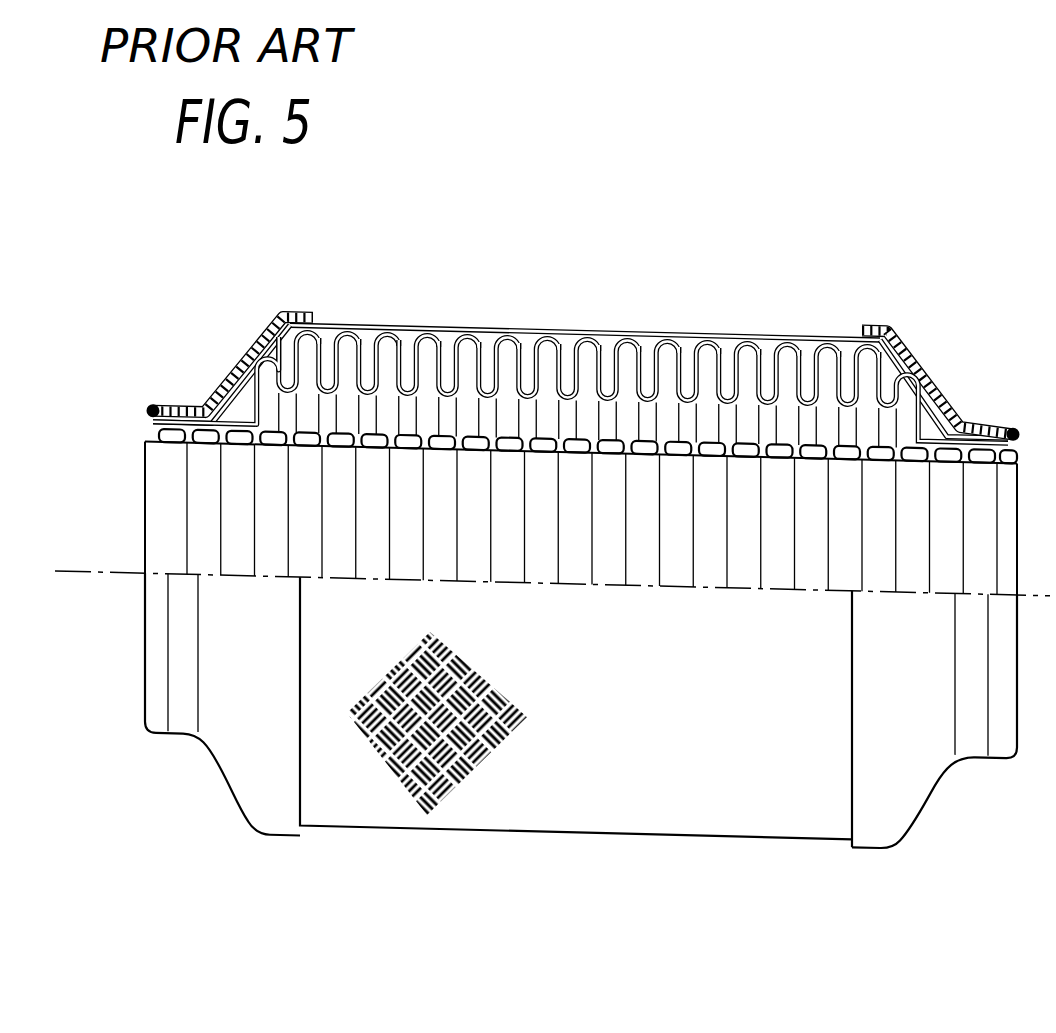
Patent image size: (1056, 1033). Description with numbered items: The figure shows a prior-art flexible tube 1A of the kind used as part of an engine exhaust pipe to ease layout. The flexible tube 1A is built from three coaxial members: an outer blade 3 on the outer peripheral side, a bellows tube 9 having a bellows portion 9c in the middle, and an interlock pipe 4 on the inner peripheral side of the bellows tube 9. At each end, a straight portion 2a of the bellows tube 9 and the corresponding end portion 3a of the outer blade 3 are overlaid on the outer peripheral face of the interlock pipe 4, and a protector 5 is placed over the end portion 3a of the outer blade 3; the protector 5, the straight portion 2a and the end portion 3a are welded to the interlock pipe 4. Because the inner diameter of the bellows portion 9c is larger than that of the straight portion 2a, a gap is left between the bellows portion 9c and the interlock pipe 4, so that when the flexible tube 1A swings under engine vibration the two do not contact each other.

The flexible tube 1A is at (649, 298).
The straight portion 2a is at (252, 400).
The outer blade 3 is at (526, 332).
The end portion 3a is at (212, 392).
The interlock pipe 4 is at (680, 567).
The protector 5 is at (904, 343).
The bellows tube 9 is at (800, 340).
The bellows portion 9c is at (410, 342).